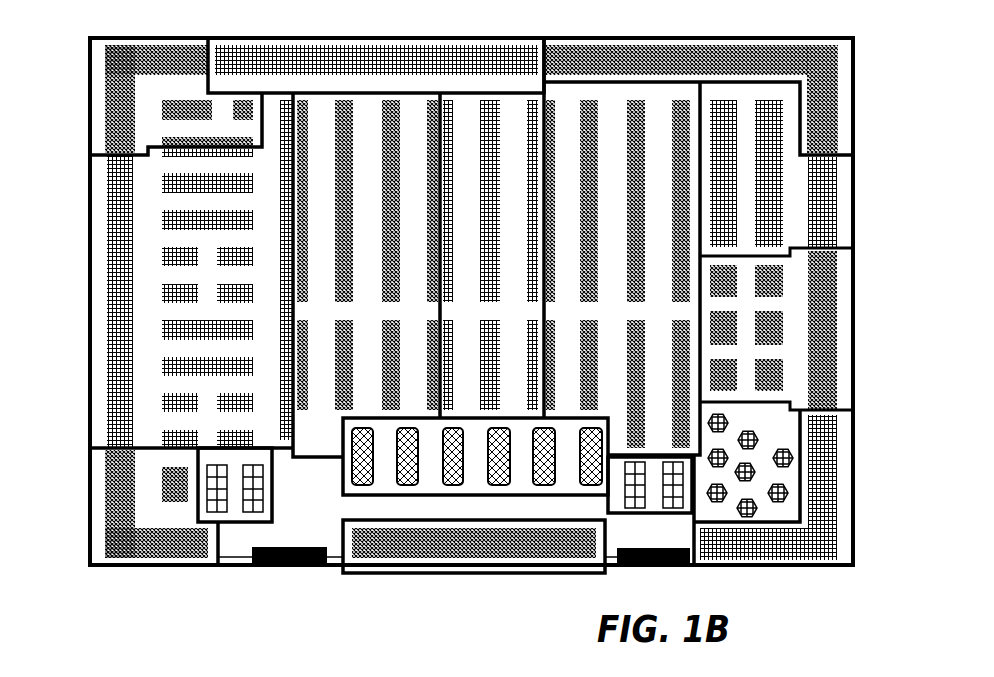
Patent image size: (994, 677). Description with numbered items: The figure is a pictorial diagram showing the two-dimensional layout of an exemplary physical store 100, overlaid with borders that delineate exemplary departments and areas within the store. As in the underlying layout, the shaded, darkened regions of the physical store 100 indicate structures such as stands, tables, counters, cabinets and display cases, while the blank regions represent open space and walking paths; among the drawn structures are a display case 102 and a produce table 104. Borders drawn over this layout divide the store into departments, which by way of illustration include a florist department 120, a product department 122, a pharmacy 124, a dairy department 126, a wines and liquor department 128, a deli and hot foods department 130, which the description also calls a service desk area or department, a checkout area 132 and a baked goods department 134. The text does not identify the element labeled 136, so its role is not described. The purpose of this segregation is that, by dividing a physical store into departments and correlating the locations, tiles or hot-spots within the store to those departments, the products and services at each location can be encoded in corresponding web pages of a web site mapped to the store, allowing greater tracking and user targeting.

The physical store 100 is at (838, 272).
The display case 102 is at (280, 198).
The produce table 104 is at (162, 292).
The florist department 120 is at (103, 490).
The product department 122 is at (103, 240).
The pharmacy 124 is at (97, 78).
The dairy department 126 is at (845, 92).
The wines and liquor department 128 is at (842, 192).
The deli and hot foods department 130 is at (845, 470).
The checkout area 132 is at (472, 483).
The baked goods department 134 is at (840, 325).
The circuit block 136 is at (380, 573).